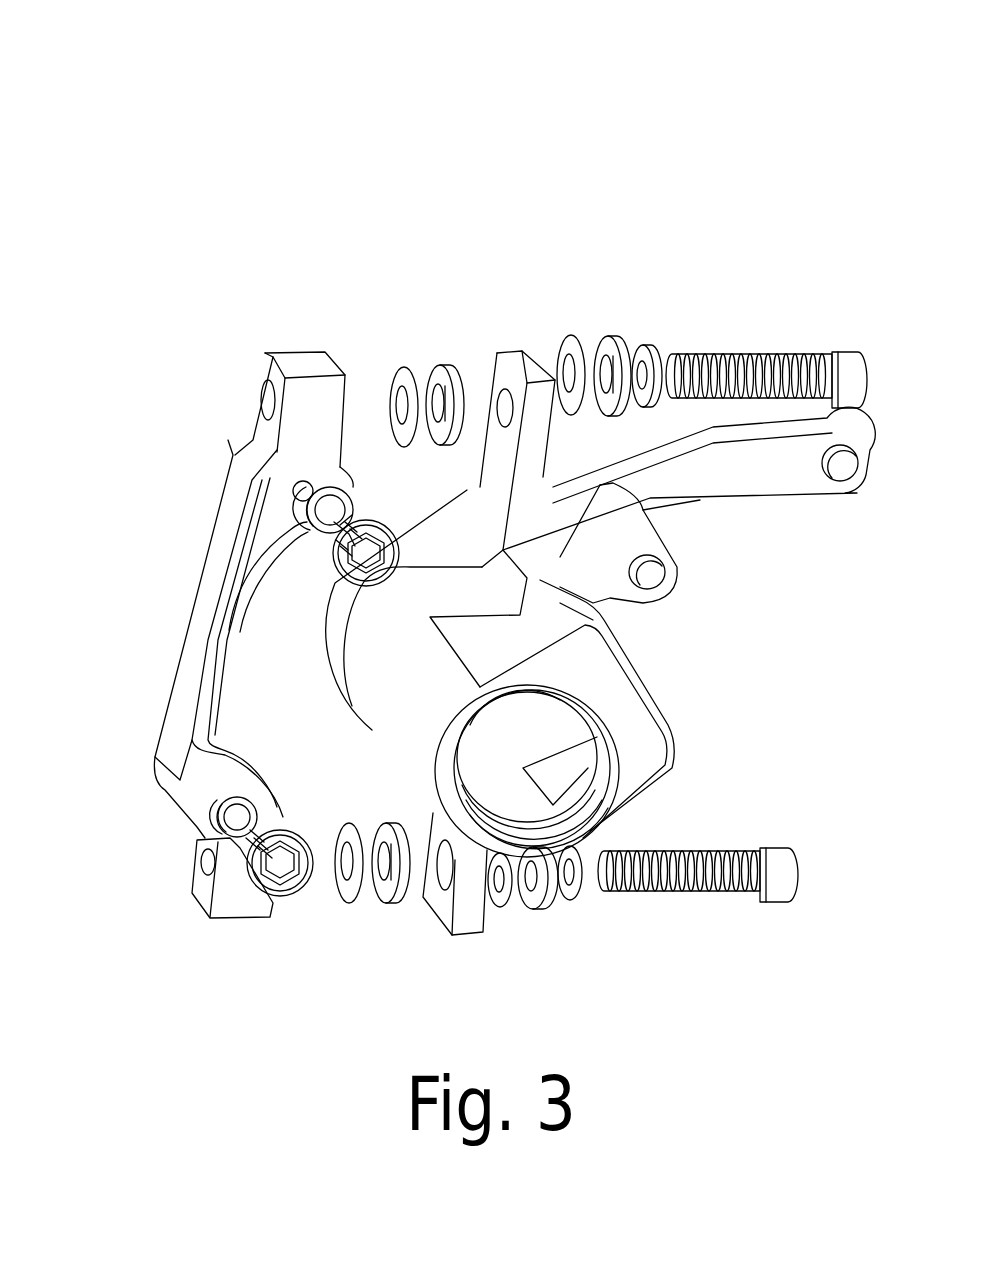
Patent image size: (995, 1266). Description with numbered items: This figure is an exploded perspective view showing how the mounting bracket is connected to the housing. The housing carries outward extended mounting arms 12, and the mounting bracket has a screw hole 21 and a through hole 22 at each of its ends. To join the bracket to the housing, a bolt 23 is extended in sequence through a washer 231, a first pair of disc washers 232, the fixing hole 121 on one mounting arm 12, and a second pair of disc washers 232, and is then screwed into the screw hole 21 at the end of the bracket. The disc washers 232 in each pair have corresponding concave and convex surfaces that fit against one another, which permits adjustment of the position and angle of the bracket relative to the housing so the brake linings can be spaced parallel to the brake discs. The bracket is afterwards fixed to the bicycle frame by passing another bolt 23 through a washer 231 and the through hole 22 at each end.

The mounting arm 12 is at (526, 360).
The fixing hole 121 is at (497, 398).
The screw hole 21 is at (268, 400).
The through hole 22 is at (300, 490).
The bolt 23 is at (803, 355).
The washer 231 is at (655, 365).
The disc washer 232 is at (402, 370).